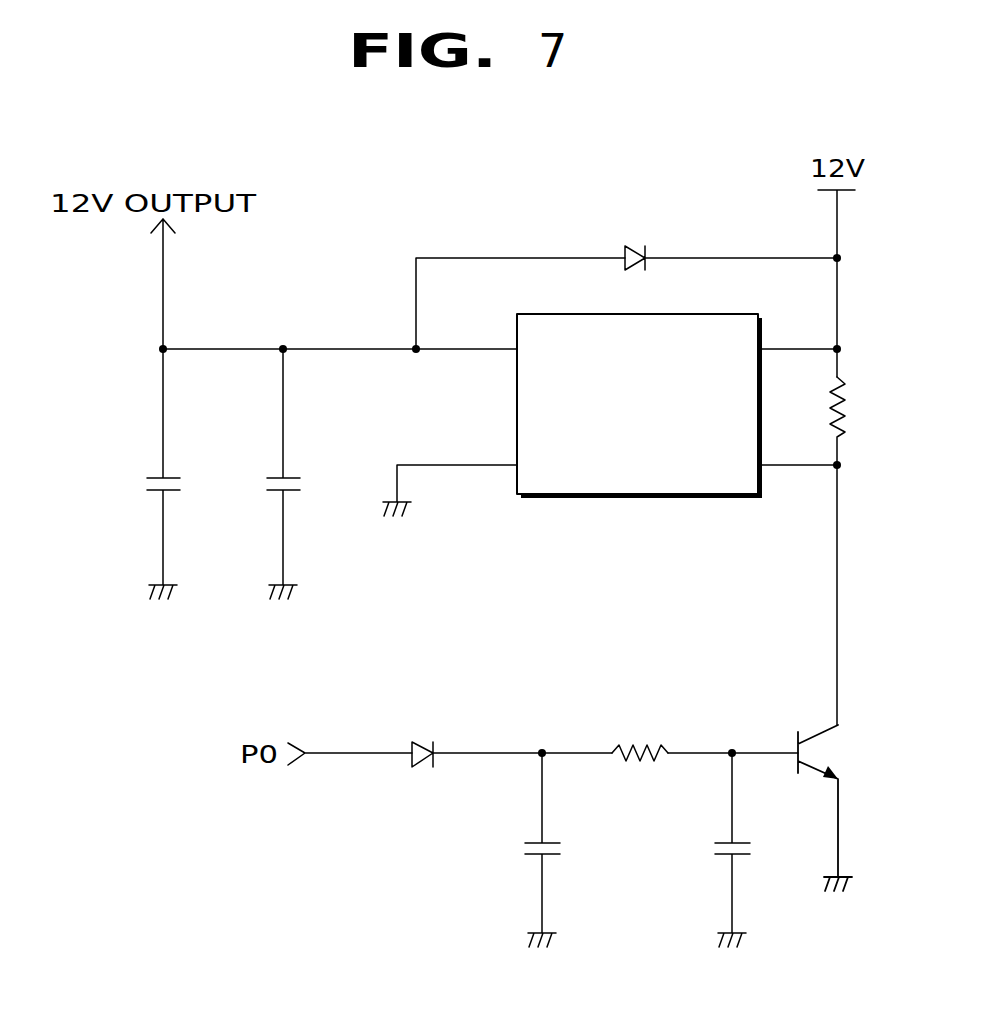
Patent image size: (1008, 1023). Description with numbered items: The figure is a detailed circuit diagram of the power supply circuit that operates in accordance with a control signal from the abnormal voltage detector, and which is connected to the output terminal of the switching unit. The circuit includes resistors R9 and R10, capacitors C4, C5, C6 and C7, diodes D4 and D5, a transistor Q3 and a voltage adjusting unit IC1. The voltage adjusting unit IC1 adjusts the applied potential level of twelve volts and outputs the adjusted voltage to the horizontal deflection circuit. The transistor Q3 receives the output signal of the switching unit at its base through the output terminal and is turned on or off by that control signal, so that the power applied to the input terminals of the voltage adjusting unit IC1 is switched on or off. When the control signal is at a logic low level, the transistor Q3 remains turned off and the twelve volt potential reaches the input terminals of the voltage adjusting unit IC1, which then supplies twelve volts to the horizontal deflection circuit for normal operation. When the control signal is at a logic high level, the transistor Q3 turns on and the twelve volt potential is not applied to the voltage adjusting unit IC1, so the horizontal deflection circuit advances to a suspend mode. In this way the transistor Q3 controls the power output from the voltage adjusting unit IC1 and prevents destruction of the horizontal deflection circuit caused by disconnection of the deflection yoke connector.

The capacitor C4 is at (140, 474).
The capacitor C5 is at (260, 474).
The diode D4 is at (636, 245).
The voltage adjusting unit IC1 is at (640, 496).
The resistor R9 is at (861, 551).
The diode D5 is at (424, 739).
The resistor R10 is at (640, 737).
The capacitor C6 is at (521, 850).
The capacitor C7 is at (710, 850).
The transistor Q3 is at (840, 808).